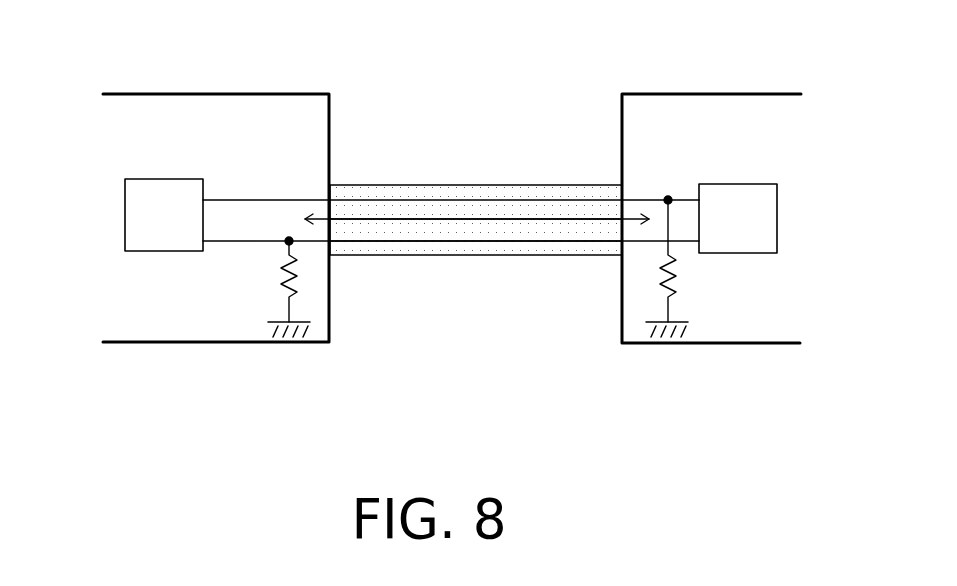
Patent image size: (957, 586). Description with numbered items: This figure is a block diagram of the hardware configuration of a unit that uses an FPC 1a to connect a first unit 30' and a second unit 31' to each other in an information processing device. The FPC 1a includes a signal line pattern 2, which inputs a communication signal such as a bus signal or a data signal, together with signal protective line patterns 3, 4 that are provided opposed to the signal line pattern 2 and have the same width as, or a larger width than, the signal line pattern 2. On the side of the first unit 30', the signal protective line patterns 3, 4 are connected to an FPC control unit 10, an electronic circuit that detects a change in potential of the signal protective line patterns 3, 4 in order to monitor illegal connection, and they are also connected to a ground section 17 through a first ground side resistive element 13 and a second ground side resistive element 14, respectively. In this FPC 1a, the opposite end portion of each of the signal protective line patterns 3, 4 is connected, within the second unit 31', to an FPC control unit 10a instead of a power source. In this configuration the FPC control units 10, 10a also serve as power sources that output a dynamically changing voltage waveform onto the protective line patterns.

The FPC 1a is at (477, 76).
The signal line pattern 2 is at (393, 218).
The signal protective line pattern 3 is at (547, 200).
The signal protective line pattern 4 is at (513, 240).
The FPC control unit 10 is at (164, 215).
The FPC control unit 10a is at (738, 218).
The first ground side resistive element 13 is at (680, 280).
The second ground side resistive element 14 is at (302, 282).
The ground section 17 is at (270, 330).
The first unit 30' is at (216, 262).
The second unit 31' is at (711, 263).